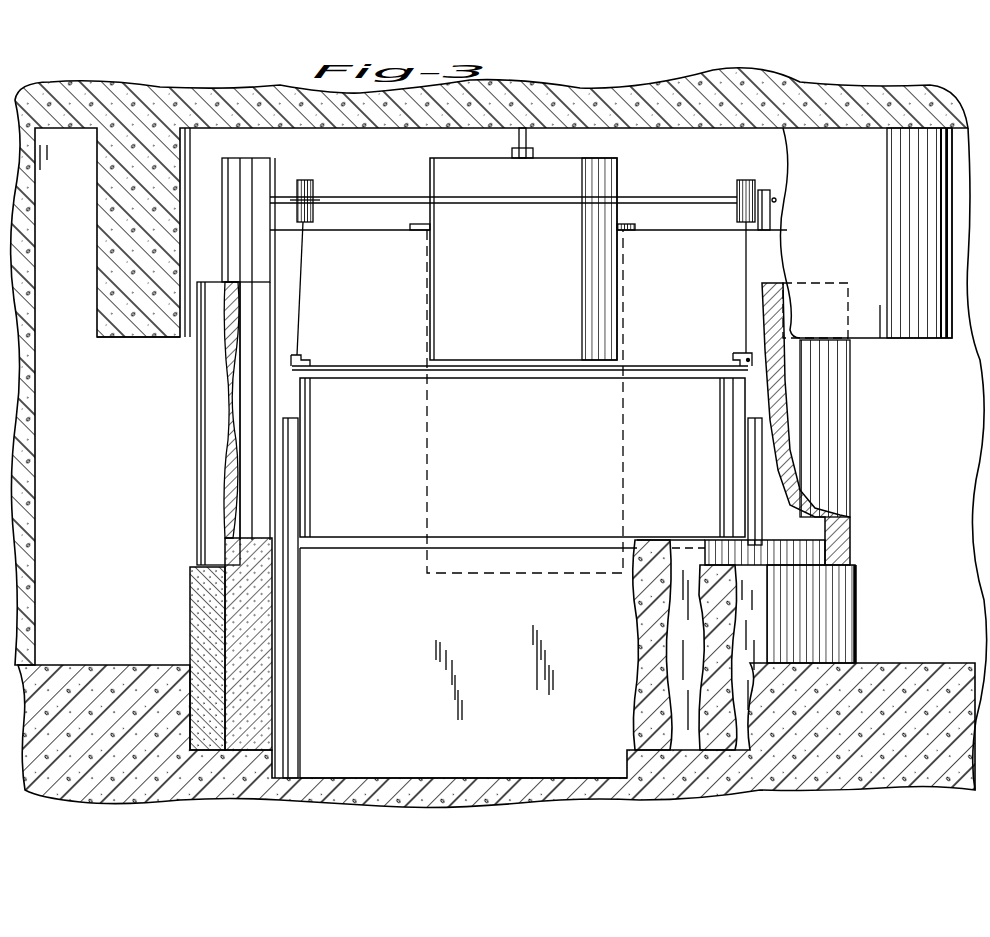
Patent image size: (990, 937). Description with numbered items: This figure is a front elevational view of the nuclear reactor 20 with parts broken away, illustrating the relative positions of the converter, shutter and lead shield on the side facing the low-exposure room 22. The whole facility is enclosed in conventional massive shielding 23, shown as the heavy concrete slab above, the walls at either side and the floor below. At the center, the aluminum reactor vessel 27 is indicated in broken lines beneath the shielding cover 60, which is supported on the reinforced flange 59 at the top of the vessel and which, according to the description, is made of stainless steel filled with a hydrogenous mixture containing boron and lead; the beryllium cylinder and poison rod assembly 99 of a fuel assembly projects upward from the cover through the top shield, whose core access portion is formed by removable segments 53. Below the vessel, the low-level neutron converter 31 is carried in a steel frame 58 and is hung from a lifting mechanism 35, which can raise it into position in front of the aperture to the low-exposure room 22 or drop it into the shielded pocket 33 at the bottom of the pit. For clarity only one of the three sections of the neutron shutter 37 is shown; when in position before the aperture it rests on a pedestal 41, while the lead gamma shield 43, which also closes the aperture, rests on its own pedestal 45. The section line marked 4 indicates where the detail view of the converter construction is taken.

The section line 4- 4 is at (295, 400).
The nuclear reactor 20 is at (370, 228).
The low-exposure room 22 is at (104, 537).
The massive shielding 23 is at (848, 92).
The aluminum reactor vessel 27 is at (430, 470).
The neutron converter 31 is at (553, 474).
The shielded pocket 33 is at (408, 784).
The lifting mechanism 35 is at (730, 186).
The neutron shutter 37 is at (531, 280).
The pedestal 41 is at (235, 585).
The lead gamma shield 43 is at (207, 393).
The pedestal 45 is at (200, 617).
The segment 53 is at (300, 732).
The steel frame 58 is at (364, 354).
The reinforced flange 59 is at (758, 528).
The shielding cover 60 is at (633, 228).
The beryllium cylinder and poison rod assembly 99 is at (519, 137).